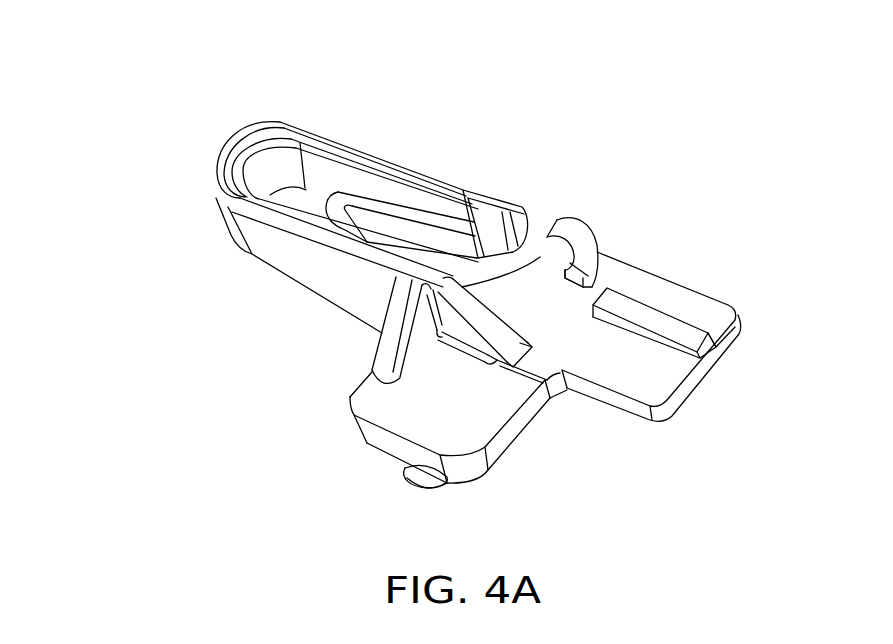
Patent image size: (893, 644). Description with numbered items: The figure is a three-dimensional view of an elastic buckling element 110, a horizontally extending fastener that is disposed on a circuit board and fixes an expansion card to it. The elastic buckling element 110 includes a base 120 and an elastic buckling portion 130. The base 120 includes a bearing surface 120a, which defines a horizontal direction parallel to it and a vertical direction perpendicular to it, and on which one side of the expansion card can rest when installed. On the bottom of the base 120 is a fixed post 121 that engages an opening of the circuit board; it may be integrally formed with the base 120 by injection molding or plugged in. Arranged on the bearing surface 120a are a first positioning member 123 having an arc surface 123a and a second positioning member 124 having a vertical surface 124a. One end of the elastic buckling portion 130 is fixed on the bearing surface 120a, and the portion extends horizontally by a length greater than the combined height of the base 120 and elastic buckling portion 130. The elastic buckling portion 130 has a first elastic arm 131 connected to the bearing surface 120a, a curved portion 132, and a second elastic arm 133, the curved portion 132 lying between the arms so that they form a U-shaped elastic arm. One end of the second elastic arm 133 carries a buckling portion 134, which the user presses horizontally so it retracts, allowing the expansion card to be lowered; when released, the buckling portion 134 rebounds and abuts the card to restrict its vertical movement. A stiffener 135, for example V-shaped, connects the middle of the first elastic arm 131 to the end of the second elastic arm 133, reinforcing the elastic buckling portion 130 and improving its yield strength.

The elastic buckling element 110 is at (777, 137).
The base 120 is at (413, 410).
The bearing surface 120a is at (716, 323).
The fixed post 121 is at (417, 487).
The first positioning member 123 is at (570, 235).
The arc surface 123a is at (598, 237).
The second positioning member 124 is at (650, 317).
The vertical surface 124a is at (691, 317).
The elastic buckling portion 130 is at (263, 15).
The first elastic arm 131 is at (292, 254).
The curved portion 132 is at (237, 153).
The second elastic arm 133 is at (352, 150).
The buckling portion 134 is at (490, 198).
The stiffener 135 is at (405, 225).